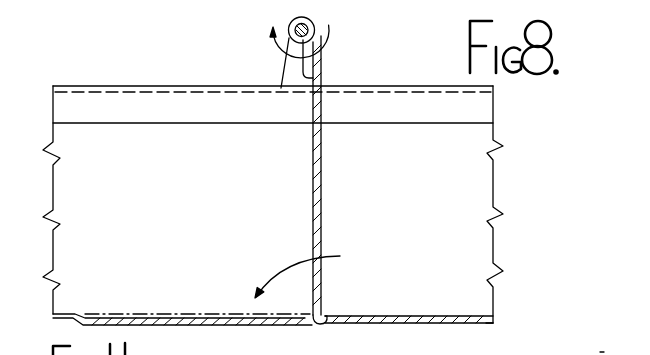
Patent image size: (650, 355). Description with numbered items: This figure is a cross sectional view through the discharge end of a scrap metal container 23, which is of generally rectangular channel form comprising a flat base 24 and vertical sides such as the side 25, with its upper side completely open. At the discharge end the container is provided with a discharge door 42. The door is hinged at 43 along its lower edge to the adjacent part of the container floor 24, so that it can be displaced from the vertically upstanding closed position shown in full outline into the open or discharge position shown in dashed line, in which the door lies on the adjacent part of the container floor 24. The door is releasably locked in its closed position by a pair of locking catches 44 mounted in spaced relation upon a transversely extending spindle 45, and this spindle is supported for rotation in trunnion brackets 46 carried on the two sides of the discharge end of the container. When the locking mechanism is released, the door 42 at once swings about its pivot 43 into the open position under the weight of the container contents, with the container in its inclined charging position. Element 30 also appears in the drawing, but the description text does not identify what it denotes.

The scrap metal container 23 is at (203, 193).
The flat base 24 is at (423, 323).
The vertical side 25 is at (504, 339).
The frame member 30 is at (600, 352).
The discharge door 42 is at (318, 208).
The hinge 43 is at (318, 326).
The locking catch 44 is at (320, 62).
The spindle 45 is at (316, 22).
The trunnion bracket 46 is at (282, 70).